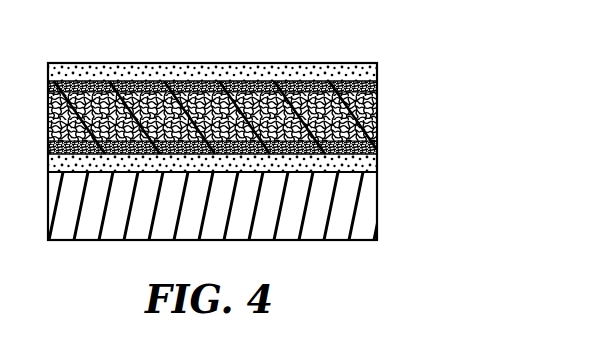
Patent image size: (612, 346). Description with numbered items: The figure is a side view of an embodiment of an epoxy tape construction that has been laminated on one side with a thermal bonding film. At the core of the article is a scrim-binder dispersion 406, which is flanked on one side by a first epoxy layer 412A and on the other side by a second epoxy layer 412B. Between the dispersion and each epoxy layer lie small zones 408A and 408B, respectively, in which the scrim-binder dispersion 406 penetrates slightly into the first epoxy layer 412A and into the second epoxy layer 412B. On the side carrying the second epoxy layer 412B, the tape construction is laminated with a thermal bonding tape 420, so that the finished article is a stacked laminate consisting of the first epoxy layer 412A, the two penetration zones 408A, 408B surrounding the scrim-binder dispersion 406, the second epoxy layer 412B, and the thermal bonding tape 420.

The first epoxy layer 412A is at (378, 72).
The small zone 408A is at (378, 88).
The scrim-binder dispersion 406 is at (378, 117).
The small zone 408B is at (378, 145).
The second epoxy layer 412B is at (378, 163).
The thermal bonding tape 420 is at (363, 203).